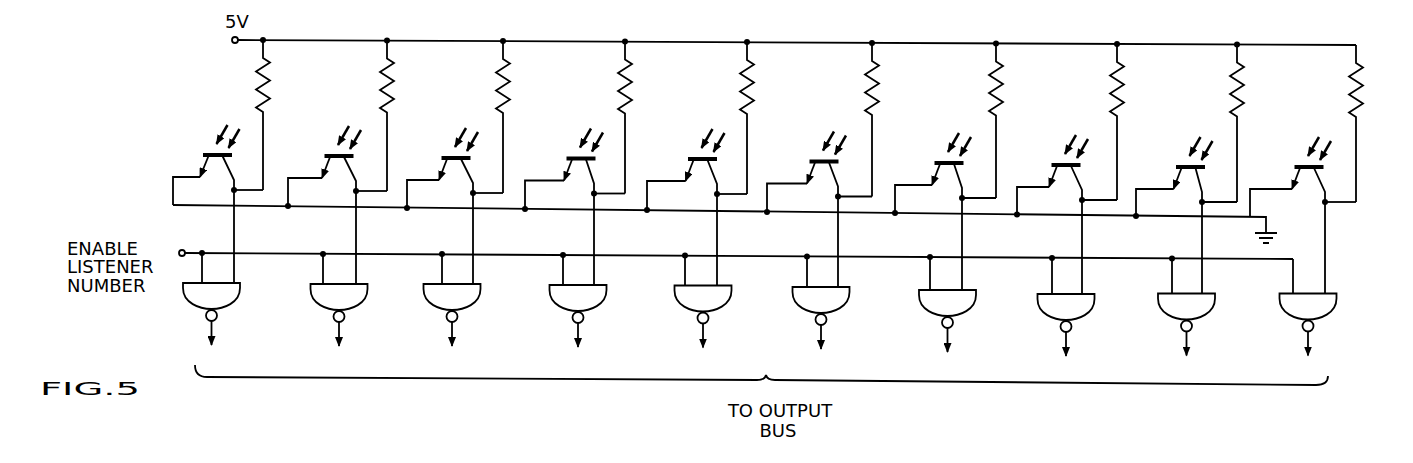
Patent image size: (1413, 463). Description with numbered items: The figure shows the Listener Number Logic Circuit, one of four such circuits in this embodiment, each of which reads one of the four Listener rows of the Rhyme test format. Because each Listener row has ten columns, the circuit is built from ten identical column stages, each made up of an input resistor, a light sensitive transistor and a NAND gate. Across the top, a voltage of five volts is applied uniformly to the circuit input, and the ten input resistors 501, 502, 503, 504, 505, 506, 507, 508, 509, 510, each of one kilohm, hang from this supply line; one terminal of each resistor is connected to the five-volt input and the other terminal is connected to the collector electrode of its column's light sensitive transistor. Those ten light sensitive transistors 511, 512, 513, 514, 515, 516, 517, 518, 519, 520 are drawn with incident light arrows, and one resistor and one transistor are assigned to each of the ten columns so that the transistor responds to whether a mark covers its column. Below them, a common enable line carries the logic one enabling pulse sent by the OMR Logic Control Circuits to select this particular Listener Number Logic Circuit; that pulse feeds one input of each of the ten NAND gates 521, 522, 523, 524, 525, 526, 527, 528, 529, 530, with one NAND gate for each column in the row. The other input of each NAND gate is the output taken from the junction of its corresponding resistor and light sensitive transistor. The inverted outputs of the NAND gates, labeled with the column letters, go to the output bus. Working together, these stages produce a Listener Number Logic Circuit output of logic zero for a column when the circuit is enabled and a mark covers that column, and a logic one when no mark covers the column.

The input resistor 501 is at (258, 90).
The input resistor 502 is at (382, 90).
The input resistor 503 is at (498, 91).
The input resistor 504 is at (620, 92).
The input resistor 505 is at (742, 92).
The input resistor 506 is at (867, 93).
The input resistor 507 is at (991, 94).
The input resistor 508 is at (1112, 94).
The input resistor 509 is at (1232, 94).
The input resistor 510 is at (1351, 95).
The light sensitive transistor 511 is at (202, 164).
The light sensitive transistor 512 is at (324, 165).
The light sensitive transistor 513 is at (441, 167).
The light sensitive transistor 514 is at (566, 168).
The light sensitive transistor 515 is at (688, 168).
The light sensitive transistor 516 is at (809, 170).
The light sensitive transistor 517 is at (934, 172).
The light sensitive transistor 518 is at (1051, 174).
The light sensitive transistor 519 is at (1176, 176).
The light sensitive transistor 520 is at (1294, 176).
The NAND gate 521 is at (236, 300).
The NAND gate 522 is at (363, 301).
The NAND gate 523 is at (476, 301).
The NAND gate 524 is at (602, 302).
The NAND gate 525 is at (727, 302).
The NAND gate 526 is at (845, 304).
The NAND gate 527 is at (972, 307).
The NAND gate 528 is at (1090, 311).
The NAND gate 529 is at (1210, 310).
The NAND gate 530 is at (1332, 310).